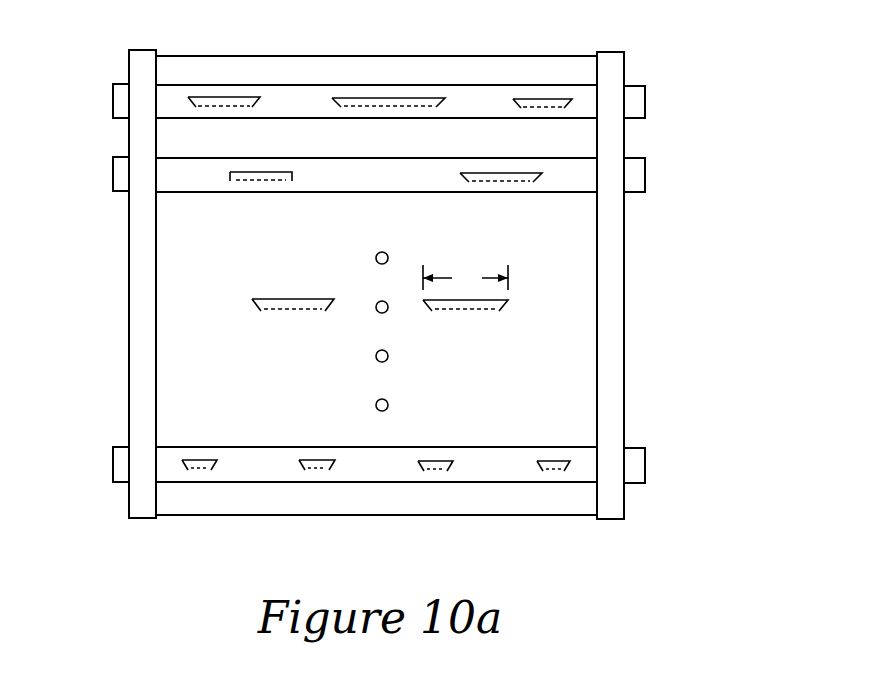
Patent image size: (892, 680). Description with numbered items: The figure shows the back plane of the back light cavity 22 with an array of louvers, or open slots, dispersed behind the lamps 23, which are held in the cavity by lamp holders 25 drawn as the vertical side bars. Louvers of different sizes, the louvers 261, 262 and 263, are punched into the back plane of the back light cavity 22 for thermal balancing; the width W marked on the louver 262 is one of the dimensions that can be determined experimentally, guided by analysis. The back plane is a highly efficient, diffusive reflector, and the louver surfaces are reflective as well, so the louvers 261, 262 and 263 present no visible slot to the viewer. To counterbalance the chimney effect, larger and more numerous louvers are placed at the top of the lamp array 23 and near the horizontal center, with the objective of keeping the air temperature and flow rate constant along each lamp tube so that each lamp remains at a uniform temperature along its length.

The light box cavity 22 is at (420, 515).
The lamps 23 is at (300, 118).
The lamp holders 25 is at (145, 340).
The louver 261 is at (347, 100).
The louver 262 is at (460, 311).
The louver 263 is at (433, 461).